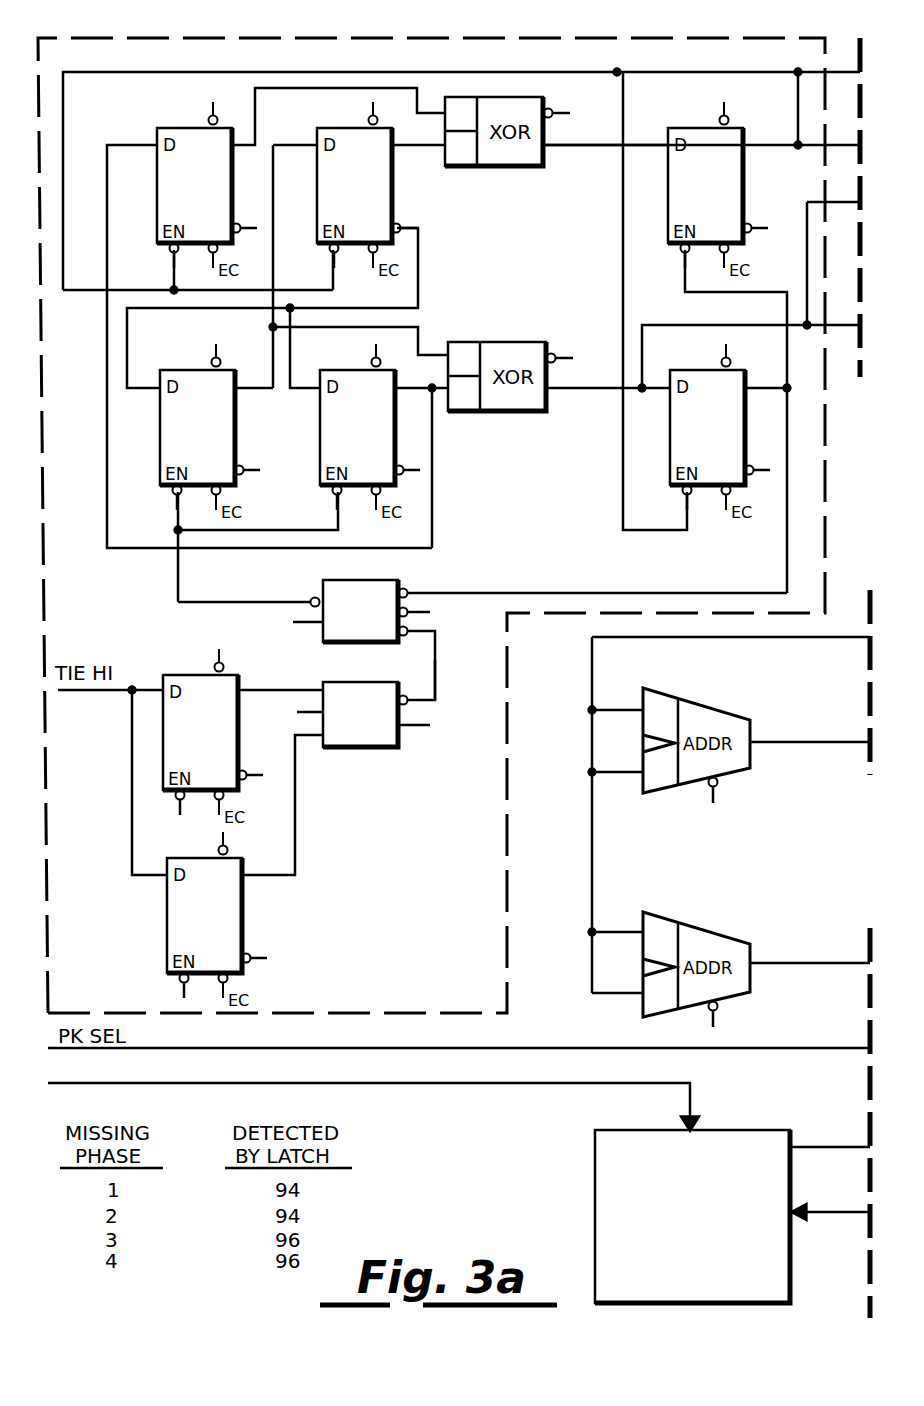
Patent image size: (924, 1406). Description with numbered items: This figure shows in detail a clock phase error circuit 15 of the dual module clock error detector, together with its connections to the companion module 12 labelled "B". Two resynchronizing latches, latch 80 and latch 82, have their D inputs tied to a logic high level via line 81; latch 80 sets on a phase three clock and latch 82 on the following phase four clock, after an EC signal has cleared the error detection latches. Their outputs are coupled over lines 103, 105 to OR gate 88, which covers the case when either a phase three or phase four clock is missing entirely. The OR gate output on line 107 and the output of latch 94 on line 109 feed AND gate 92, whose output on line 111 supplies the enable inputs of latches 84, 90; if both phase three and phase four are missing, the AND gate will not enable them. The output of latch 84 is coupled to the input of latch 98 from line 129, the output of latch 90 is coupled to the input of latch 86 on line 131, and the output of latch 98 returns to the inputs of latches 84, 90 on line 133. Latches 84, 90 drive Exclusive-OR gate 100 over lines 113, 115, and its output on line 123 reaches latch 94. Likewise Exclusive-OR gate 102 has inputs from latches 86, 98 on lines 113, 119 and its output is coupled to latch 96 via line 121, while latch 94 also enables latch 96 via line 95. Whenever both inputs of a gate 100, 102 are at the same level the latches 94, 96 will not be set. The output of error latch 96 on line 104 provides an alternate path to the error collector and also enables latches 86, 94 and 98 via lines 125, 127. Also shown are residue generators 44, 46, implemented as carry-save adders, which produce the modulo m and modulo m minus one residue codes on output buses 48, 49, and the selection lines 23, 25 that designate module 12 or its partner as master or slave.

The clock phase error circuit 15 is at (300, 36).
The line 125 is at (133, 70).
The line 113 is at (340, 86).
The line 131 is at (107, 242).
The line 133 is at (418, 277).
The latch 86 is at (187, 126).
The latch 98 is at (347, 126).
The error latch 96 is at (698, 126).
The line 104 is at (796, 117).
The line 119 is at (415, 148).
The Exclusive-OR gate 102 is at (495, 168).
The line 121 is at (575, 148).
The line 95 is at (685, 280).
The latch 84 is at (190, 368).
The latch 90 is at (353, 368).
The latch 94 is at (702, 368).
The line 129 is at (250, 390).
The line 115 is at (438, 395).
The Exclusive-OR gate 100 is at (500, 412).
The line 123 is at (580, 392).
The line 127 is at (623, 514).
The line 111 is at (178, 586).
The AND gate 92 is at (366, 580).
The line 109 is at (503, 593).
The OR gate 88 is at (368, 682).
The line 107 is at (438, 688).
The line 81 is at (112, 700).
The latch 82 is at (196, 672).
The line 103 is at (268, 690).
The line 105 is at (295, 818).
The clock error latch 80 is at (200, 856).
The residue generator 44 is at (715, 706).
The output bus 48 is at (775, 745).
The residue generator 46 is at (725, 928).
The output bus 49 is at (778, 966).
The selection line 23 is at (180, 1047).
The selection line 25 is at (180, 1082).
The module B 12 is at (724, 1130).